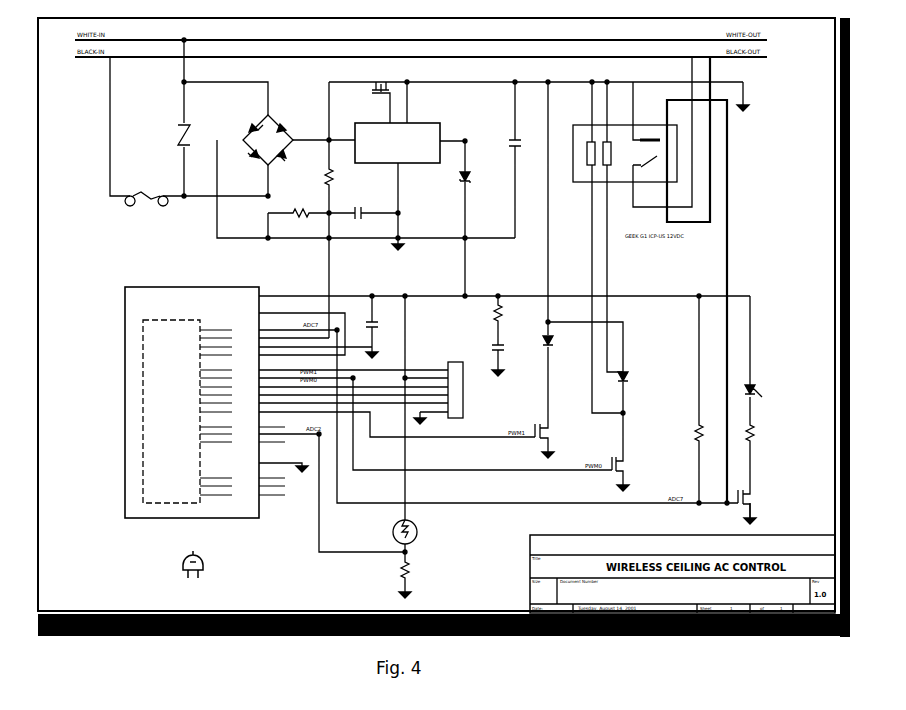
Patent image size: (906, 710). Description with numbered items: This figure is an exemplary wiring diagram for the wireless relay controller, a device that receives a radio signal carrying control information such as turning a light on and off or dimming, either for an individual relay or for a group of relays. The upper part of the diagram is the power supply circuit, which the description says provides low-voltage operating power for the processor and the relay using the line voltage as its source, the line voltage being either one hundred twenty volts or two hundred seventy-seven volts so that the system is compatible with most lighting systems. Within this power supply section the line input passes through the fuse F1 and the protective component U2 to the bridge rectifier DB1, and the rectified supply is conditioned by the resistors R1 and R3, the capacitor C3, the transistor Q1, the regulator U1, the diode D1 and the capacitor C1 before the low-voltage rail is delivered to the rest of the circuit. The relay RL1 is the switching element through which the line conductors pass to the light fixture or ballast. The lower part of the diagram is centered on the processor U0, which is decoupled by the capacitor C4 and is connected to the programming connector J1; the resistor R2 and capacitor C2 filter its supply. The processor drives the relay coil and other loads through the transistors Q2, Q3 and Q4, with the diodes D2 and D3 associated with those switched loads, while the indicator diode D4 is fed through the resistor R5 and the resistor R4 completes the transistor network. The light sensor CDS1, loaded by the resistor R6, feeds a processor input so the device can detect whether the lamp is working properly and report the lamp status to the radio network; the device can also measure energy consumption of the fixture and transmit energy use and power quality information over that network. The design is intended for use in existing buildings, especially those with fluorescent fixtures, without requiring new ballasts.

The fuse 0.5A F1 is at (145, 199).
The varistor ERZ-V05D391 U2 is at (165, 133).
The bridge rectifier W005G DB1 is at (270, 140).
The resistor 10M R1 is at (335, 177).
The resistor 680K R3 is at (301, 213).
The capacitor 0.22UF C3 is at (356, 214).
The MOSFET VDD4659N Q1 is at (393, 84).
The regulator P8166 SR032 U1 is at (406, 138).
The diode 1N5817 D1 is at (475, 177).
The capacitor 330UF-35V C1 is at (503, 142).
The relay RL1 is at (616, 153).
The microcontroller ATMEGA128 U0 is at (205, 398).
The capacitor 0.1UF C4 is at (378, 324).
The programming connector J1 is at (444, 381).
The resistor 10 R2 is at (502, 313).
The capacitor 1.0F-6.3V C2 is at (510, 348).
The diode 1N4001 D2 is at (558, 340).
The diode 1N4002 D3 is at (633, 376).
The MOSFET VN0110 Q2 is at (554, 436).
The MOSFET VN2110 Q3 is at (630, 470).
The resistor 10K R4 is at (704, 433).
The LED D4 is at (761, 388).
The resistor 1K R5 is at (754, 433).
The MOSFET VN2110 Q4 is at (756, 502).
The photocell CDS CDS1 is at (414, 532).
The resistor 100K R6 is at (412, 570).